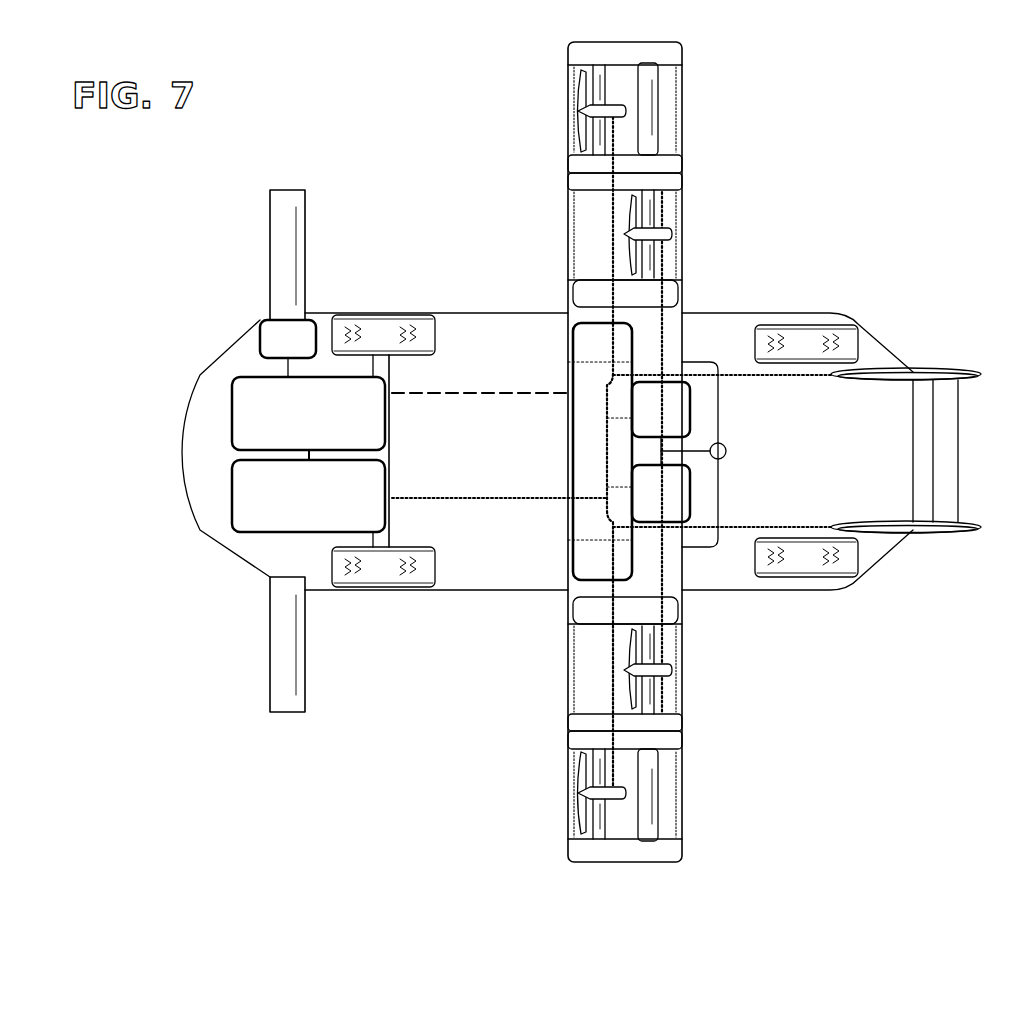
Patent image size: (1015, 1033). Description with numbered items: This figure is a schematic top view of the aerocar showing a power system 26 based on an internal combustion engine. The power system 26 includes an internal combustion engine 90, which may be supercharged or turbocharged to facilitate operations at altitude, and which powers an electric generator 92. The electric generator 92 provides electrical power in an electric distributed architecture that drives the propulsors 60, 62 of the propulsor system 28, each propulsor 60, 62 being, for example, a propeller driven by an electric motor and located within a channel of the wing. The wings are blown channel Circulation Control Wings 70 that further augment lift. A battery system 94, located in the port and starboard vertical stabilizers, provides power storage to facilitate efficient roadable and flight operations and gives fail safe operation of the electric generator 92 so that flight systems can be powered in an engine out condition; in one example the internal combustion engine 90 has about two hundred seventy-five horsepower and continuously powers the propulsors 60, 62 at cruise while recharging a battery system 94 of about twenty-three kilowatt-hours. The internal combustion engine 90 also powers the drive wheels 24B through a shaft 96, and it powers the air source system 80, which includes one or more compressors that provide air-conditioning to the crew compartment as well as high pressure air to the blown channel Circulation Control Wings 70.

The drive wheel 24B is at (373, 330).
The power system 26 is at (268, 551).
The propulsor system 28 is at (722, 82).
The propulsor 60 is at (670, 230).
The propulsor 62 is at (578, 111).
The blown channel Circulation Control Wing 70 is at (572, 98).
The air source system 80 is at (475, 421).
The internal combustion engine 90 is at (260, 403).
The electric generator 92 is at (250, 498).
The battery system 94 is at (927, 374).
The shaft 96 is at (390, 368).